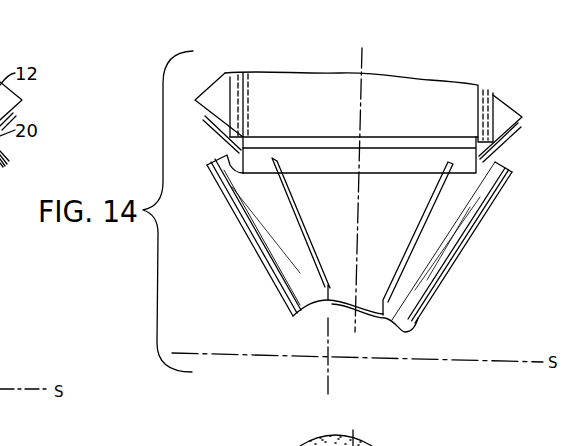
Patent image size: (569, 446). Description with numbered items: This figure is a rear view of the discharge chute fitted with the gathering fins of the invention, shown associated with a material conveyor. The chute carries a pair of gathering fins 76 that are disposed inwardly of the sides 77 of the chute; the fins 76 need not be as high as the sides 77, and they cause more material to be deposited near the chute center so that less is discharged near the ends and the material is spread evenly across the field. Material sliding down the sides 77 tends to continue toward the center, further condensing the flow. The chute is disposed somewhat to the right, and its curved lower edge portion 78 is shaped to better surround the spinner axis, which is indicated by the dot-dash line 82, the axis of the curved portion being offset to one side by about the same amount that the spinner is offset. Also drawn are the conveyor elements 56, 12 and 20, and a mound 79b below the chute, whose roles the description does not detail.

The body member 56 is at (442, 90).
The end member 12 is at (500, 113).
The rail 20 is at (467, 168).
The gathering fins 76 is at (303, 238).
The sides 77 is at (258, 248).
The curved lower edge portion 78 is at (373, 323).
The dot-dash line 82 is at (331, 378).
The mound 79b is at (370, 445).